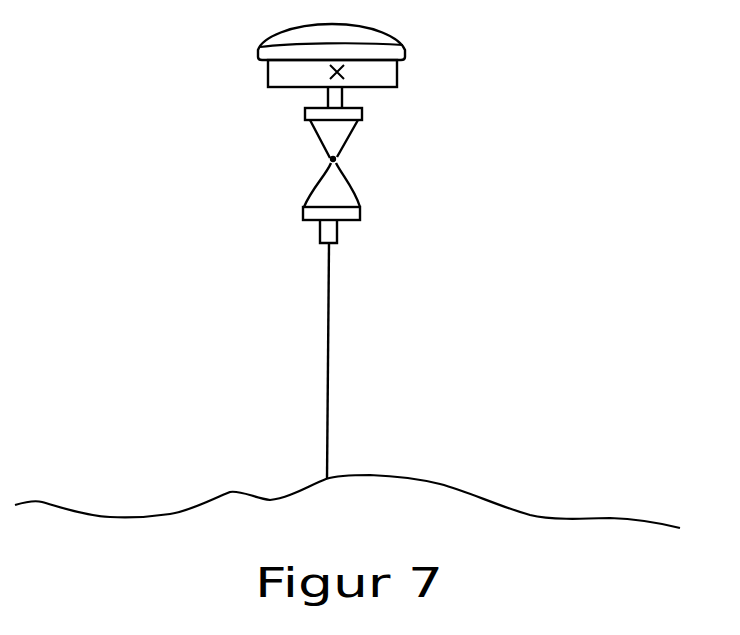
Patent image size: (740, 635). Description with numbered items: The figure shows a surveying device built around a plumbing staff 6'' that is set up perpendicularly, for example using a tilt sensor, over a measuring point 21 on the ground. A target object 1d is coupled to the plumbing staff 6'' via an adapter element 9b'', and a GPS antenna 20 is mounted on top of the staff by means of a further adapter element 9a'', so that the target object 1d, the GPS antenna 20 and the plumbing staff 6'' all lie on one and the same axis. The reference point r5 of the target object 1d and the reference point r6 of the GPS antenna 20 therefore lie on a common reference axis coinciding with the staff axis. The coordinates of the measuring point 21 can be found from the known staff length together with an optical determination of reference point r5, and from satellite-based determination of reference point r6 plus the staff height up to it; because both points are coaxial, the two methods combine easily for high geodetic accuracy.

The GPS antenna 20 is at (307, 65).
The reference point of the GPS antenna r6 is at (337, 73).
The adapter element 9a'' is at (193, 122).
The reference point of the target object r5 is at (335, 158).
The target object 1d is at (334, 177).
The adapter element 9b'' is at (192, 268).
The plumbing staff 6'' is at (385, 361).
The measuring point 21 is at (313, 473).